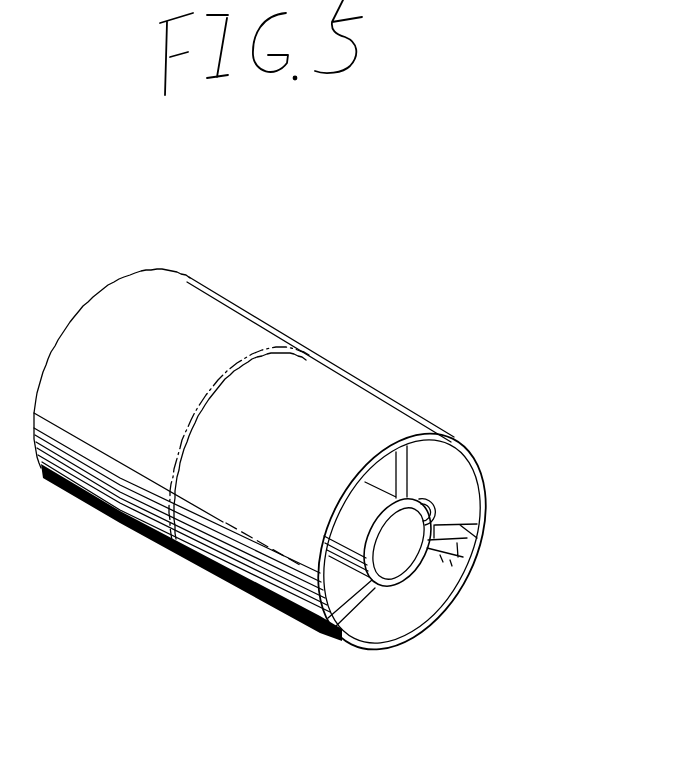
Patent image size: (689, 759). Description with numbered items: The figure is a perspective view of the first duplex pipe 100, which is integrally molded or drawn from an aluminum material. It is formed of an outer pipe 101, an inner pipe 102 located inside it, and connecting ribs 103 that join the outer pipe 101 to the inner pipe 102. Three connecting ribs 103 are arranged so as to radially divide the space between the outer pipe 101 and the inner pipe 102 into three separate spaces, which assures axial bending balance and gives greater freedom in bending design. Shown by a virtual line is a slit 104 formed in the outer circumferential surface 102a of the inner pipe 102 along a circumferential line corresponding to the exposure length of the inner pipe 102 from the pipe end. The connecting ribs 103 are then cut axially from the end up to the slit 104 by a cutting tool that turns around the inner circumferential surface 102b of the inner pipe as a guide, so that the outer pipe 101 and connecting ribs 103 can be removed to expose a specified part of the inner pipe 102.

The first duplex pipe 100 is at (215, 154).
The outer pipe 101 is at (418, 627).
The inner pipe 102 is at (400, 552).
The outer circumferential surface 102a is at (428, 504).
The inner circumferential surface 102b is at (424, 522).
The connecting ribs 103 is at (425, 458).
The slit 104 is at (284, 343).